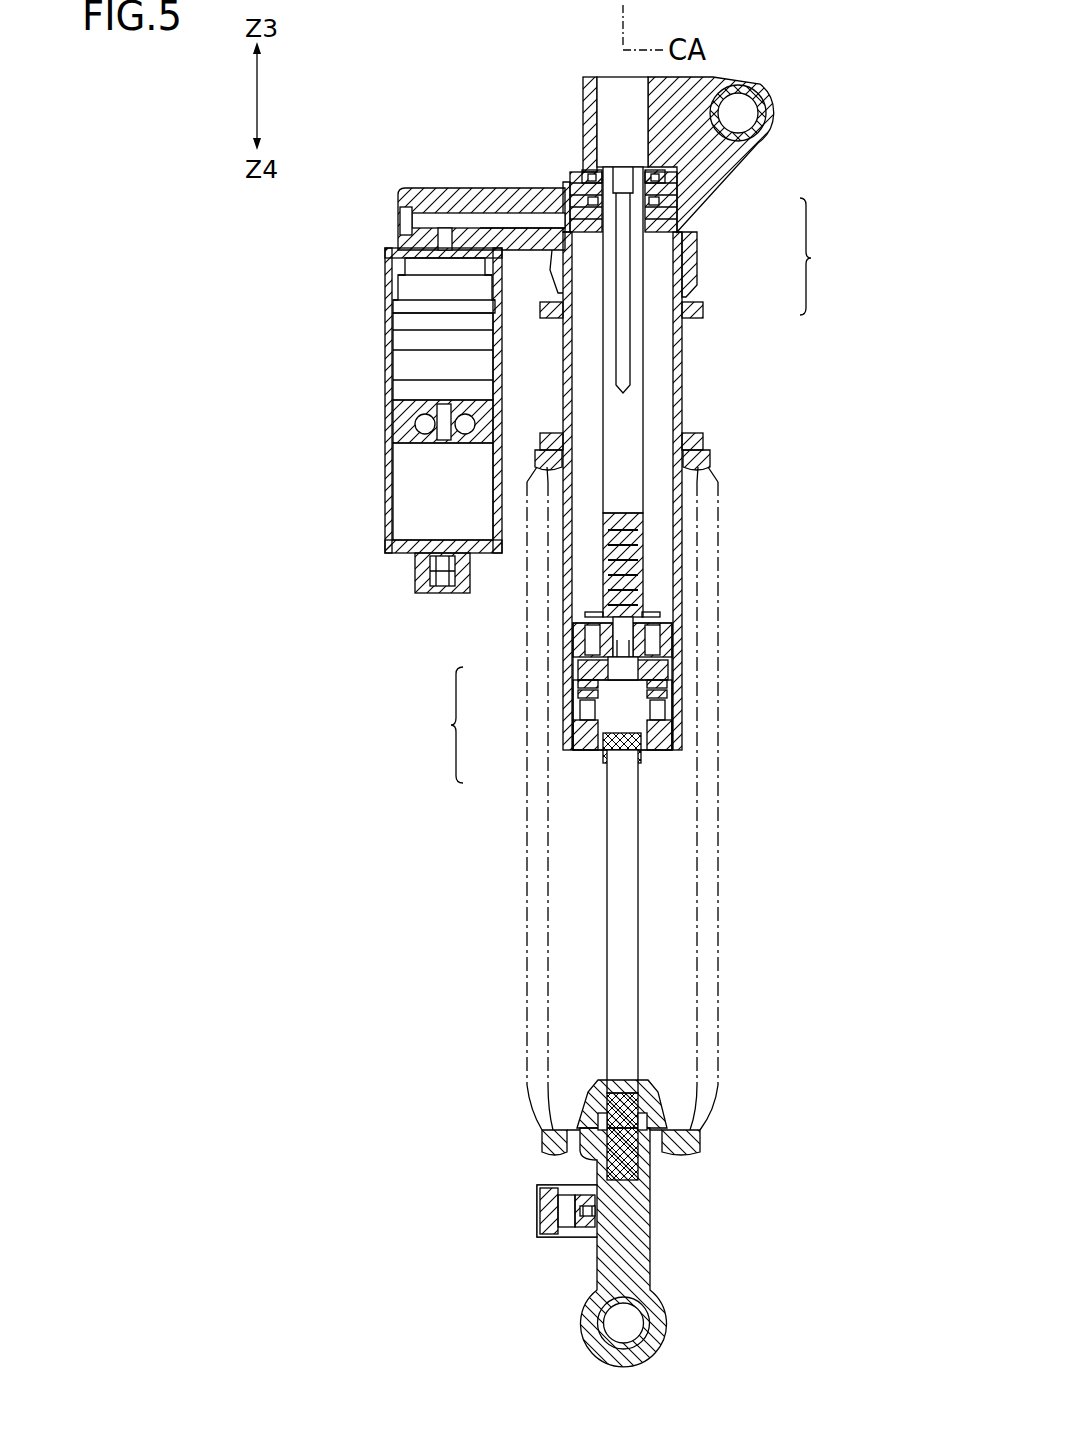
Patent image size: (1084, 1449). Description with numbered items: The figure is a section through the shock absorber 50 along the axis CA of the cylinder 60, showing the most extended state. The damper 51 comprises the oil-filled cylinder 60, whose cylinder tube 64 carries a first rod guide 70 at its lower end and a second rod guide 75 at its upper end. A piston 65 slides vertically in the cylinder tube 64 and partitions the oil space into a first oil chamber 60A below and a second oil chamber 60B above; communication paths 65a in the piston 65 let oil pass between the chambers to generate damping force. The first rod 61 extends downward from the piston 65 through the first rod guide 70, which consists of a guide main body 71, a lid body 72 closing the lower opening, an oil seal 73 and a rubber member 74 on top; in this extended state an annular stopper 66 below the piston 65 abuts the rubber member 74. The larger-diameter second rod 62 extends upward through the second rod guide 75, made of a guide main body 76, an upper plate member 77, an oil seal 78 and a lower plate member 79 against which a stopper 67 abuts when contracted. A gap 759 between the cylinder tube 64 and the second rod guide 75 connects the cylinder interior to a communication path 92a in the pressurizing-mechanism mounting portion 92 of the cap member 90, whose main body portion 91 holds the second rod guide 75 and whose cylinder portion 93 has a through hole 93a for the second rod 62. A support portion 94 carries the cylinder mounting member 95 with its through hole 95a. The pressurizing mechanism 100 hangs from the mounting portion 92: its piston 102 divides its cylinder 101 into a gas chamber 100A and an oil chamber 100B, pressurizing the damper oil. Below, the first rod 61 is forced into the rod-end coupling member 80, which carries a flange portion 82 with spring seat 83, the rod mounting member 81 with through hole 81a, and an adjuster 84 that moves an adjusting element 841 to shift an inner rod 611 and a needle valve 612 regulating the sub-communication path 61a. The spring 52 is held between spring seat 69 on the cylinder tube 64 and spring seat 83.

The shock absorber 50 is at (264, 248).
The damper 51 is at (848, 356).
The spring 52 is at (527, 905).
The cylinder 60 is at (735, 392).
The first oil chamber 60A is at (680, 658).
The second oil chamber 60B is at (662, 492).
The first rod 61 is at (640, 955).
The sub-communication path 61a is at (627, 630).
The inner rod 611 is at (600, 1093).
The needle valve 612 is at (682, 747).
The second rod 62 is at (605, 405).
The cylinder tube 64 is at (683, 358).
The piston 65 is at (675, 645).
The communication paths 65a is at (657, 638).
The stopper 66 is at (672, 670).
The stopper 67 is at (575, 605).
The spring seat 69 is at (700, 457).
The first rod guide 70 is at (545, 726).
The guide main body 71 is at (585, 718).
The lid body 72 is at (598, 752).
The oil seal 73 is at (578, 695).
The rubber member 74 is at (578, 678).
The second rod guide 75 is at (710, 245).
The guide main body 76 is at (650, 195).
The plate member 77 is at (660, 175).
The oil seal 78 is at (660, 205).
The plate member 79 is at (655, 218).
The gap 759 is at (558, 217).
The rod-end coupling member 80 is at (640, 1262).
The rod mounting member 81 is at (660, 1322).
The through hole 81a is at (615, 1323).
The flange portion 82 is at (662, 1148).
The spring seat 83 is at (700, 1142).
The adjuster 84 is at (540, 1195).
The adjusting element 841 is at (615, 1225).
The cap member 90 is at (494, 106).
The main body portion 91 is at (580, 176).
The pressurizing-mechanism mounting portion 92 is at (418, 192).
The communication path 92a is at (488, 212).
The cylinder portion 93 is at (590, 110).
The through hole 93a is at (608, 72).
The support portion 94 is at (700, 92).
The cylinder mounting member 95 is at (762, 118).
The through hole 95a is at (750, 103).
The pressurizing mechanism 100 is at (253, 432).
The gas chamber 100A is at (412, 513).
The oil chamber 100B is at (412, 330).
The cylinder 101 is at (390, 357).
The piston 102 is at (405, 442).